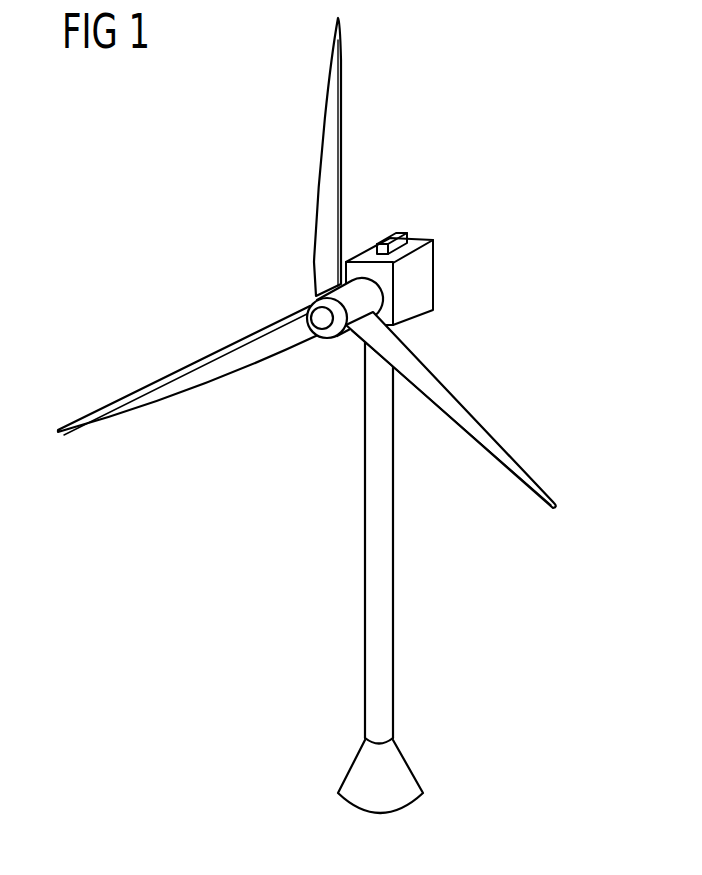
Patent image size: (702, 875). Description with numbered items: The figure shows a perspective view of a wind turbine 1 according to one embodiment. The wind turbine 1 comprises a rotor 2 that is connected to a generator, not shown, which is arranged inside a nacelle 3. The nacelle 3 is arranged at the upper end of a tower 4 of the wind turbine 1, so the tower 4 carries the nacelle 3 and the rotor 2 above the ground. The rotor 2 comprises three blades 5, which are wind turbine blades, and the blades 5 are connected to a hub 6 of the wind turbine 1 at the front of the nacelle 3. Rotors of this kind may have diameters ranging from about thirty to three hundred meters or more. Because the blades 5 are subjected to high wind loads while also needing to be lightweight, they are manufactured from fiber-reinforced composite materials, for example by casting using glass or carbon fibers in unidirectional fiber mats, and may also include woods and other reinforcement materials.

The wind turbine 1 is at (170, 178).
The rotor 2 is at (161, 355).
The nacelle 3 is at (423, 275).
The tower 4 is at (382, 648).
The blades 5 is at (330, 155).
The hub 6 is at (365, 297).